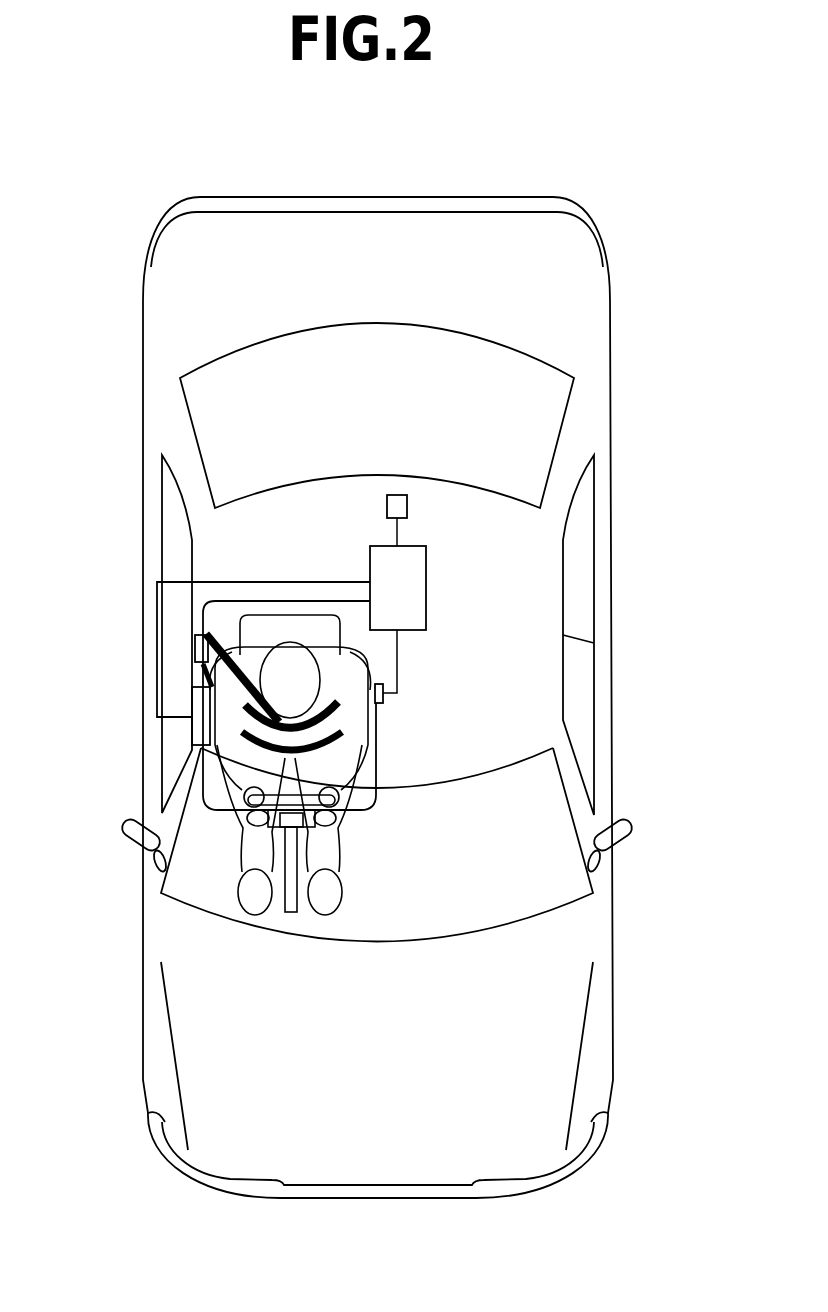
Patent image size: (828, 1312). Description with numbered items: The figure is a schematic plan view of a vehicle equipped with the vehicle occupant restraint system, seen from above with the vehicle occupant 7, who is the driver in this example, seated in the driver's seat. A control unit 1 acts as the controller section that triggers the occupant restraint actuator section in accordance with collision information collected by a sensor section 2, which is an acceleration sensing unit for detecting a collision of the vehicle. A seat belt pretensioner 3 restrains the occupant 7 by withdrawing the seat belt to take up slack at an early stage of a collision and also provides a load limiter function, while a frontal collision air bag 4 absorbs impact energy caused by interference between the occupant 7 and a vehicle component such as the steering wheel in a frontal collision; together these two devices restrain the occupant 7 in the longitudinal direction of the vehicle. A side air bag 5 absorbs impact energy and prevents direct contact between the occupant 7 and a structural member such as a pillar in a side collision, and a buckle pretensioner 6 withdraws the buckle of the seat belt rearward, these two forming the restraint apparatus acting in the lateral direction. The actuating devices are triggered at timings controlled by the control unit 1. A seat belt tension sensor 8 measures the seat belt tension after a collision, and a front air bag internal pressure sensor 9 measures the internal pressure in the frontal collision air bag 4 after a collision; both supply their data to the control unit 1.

The control unit 1 is at (415, 577).
The sensor section 2 is at (401, 500).
The seat belt pretensioner 3 is at (193, 645).
The frontal collision air bag 4 is at (257, 828).
The side air bag 5 is at (197, 730).
The buckle pretensioner 6 is at (384, 690).
The vehicle occupant 7 is at (292, 658).
The seat belt tension sensor 8 is at (198, 623).
The front air bag internal pressure sensor 9 is at (317, 817).